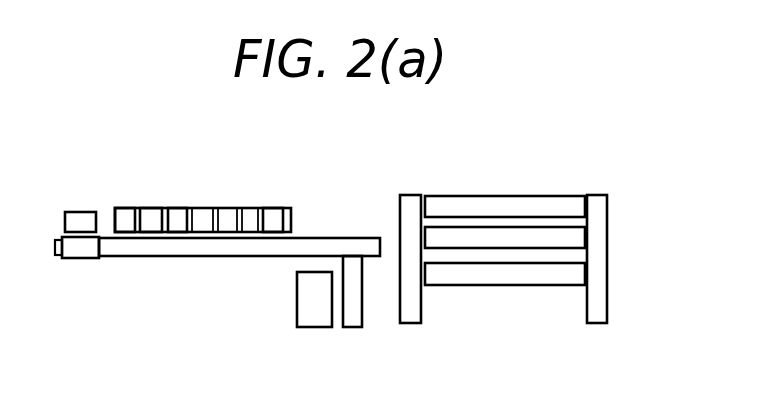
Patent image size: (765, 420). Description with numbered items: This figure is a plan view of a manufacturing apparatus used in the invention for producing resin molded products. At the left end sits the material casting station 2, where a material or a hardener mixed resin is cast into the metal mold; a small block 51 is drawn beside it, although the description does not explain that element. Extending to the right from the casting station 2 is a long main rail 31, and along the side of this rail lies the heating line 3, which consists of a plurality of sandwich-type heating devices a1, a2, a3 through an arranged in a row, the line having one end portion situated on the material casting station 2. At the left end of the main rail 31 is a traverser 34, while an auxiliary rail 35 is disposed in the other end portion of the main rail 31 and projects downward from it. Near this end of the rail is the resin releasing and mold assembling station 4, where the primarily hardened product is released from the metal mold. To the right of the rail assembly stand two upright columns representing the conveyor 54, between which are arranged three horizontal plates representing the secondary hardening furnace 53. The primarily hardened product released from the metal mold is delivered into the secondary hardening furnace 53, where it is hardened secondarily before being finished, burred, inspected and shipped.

The material casting station 2 is at (95, 187).
The heating line 3 is at (246, 187).
The resin releasing and mold assembling station 4 is at (312, 311).
The main rail 31 is at (185, 256).
The traverser 34 is at (83, 258).
The auxiliary rail 35 is at (362, 318).
The holder 51 is at (73, 223).
The secondary hardening furnace 53 is at (470, 202).
The conveyor 54 is at (413, 202).
The heating device a1 is at (127, 213).
The heating device a2 is at (148, 213).
The heating device a3 is at (180, 213).
The heating device an is at (278, 213).